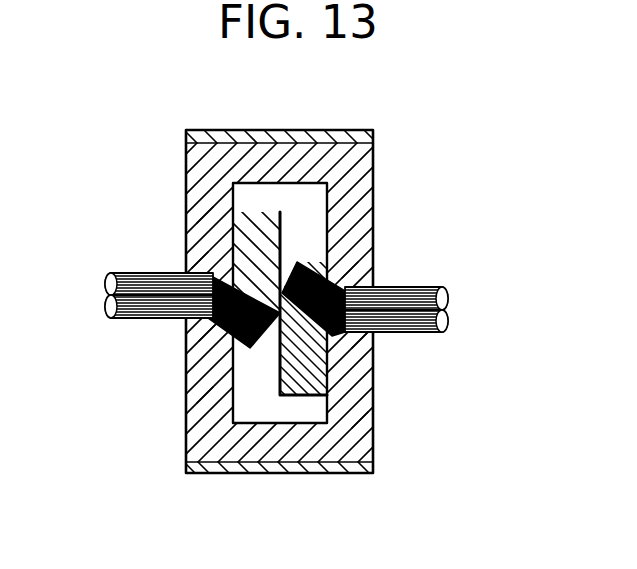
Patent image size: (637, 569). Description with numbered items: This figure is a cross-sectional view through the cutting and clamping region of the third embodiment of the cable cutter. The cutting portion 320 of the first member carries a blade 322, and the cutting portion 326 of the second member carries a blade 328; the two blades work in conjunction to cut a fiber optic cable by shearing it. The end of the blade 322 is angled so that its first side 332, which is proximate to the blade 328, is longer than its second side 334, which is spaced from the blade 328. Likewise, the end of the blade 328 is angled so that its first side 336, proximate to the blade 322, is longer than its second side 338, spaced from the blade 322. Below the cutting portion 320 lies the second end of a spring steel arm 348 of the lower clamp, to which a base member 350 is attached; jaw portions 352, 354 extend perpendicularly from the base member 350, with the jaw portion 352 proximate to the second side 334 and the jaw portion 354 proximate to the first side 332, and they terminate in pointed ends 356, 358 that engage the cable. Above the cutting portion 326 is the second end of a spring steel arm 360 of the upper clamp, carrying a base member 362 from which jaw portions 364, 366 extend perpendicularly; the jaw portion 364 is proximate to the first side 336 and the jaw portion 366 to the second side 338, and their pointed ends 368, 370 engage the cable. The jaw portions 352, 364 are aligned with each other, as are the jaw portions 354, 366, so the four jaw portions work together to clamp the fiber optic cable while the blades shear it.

The cutting portion 320 is at (365, 412).
The blade 322 is at (325, 368).
The cutting portion 326 is at (238, 236).
The blade 328 is at (243, 245).
The first side 332 is at (280, 395).
The second side 334 is at (326, 386).
The first side 336 is at (290, 232).
The second side 338 is at (203, 215).
The arm 348 is at (318, 465).
The base member 350 is at (271, 445).
The jaw portion 352 is at (360, 420).
The jaw portion 354 is at (205, 386).
The pointed end 356 is at (362, 346).
The pointed end 358 is at (207, 337).
The arm 360 is at (312, 130).
The base member 362 is at (259, 136).
The jaw portion 364 is at (352, 182).
The jaw portion 366 is at (197, 212).
The pointed end 368 is at (350, 268).
The pointed end 370 is at (200, 262).